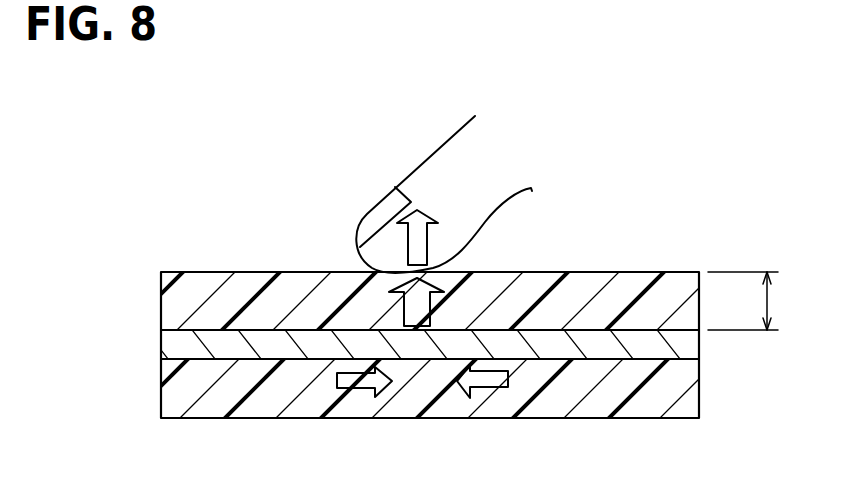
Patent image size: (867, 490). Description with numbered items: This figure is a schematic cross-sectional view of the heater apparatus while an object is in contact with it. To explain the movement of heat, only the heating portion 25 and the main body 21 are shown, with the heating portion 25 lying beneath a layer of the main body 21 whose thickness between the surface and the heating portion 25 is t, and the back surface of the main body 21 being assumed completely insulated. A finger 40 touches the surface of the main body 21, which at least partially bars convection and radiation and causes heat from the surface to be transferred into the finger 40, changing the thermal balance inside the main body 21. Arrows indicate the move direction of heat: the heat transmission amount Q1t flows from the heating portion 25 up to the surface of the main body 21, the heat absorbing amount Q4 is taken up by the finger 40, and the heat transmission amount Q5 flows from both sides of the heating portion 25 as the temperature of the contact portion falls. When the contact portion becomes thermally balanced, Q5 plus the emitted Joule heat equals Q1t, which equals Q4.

The main body 21 is at (240, 297).
The heating portion 25 is at (170, 343).
The finger 40 is at (437, 165).
The heat absorbing amount of the finger Q4 is at (415, 238).
The heat transmission amount from the heating portion to the surface of the main bod Q1t is at (430, 303).
The heat transmission amount from the sides of the heating portion Q5 is at (357, 382).
The thickness between the surface of the main body and the heating portion t is at (768, 297).